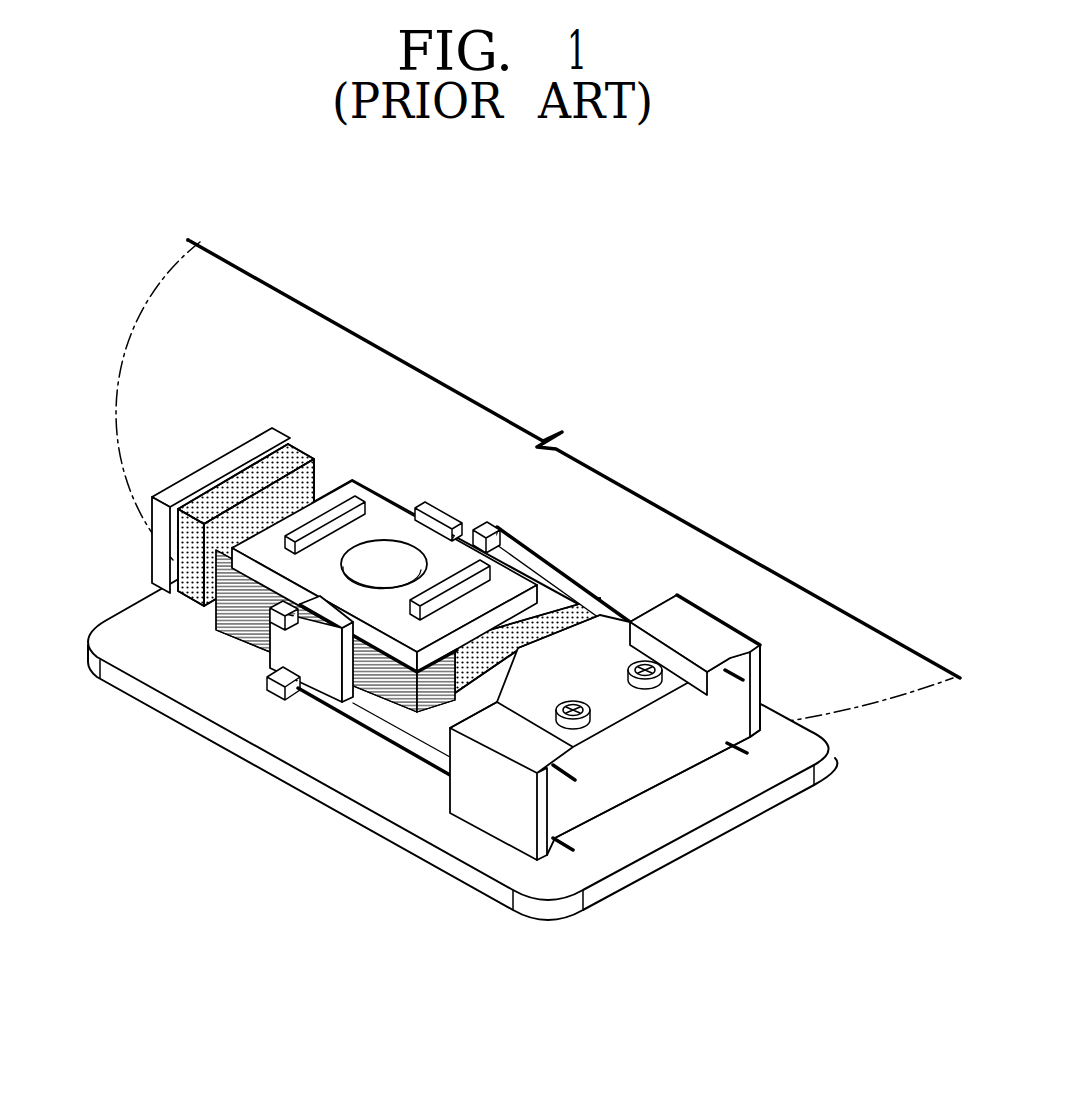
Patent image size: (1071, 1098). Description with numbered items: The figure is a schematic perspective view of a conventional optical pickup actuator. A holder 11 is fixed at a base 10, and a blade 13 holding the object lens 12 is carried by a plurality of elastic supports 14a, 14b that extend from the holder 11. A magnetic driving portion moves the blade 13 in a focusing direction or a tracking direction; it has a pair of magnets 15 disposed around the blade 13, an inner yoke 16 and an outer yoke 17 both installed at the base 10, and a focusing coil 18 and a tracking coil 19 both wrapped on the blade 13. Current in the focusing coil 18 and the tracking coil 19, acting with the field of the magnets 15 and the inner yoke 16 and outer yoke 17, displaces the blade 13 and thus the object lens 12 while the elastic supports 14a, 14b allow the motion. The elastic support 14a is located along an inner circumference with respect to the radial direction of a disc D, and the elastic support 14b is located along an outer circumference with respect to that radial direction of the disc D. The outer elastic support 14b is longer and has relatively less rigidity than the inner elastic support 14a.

The base 10 is at (493, 866).
The holder 11 is at (641, 777).
The object lens 12 is at (393, 553).
The blade 13 is at (388, 541).
The elastic support 14a is at (392, 695).
The elastic support 14b is at (603, 622).
The magnets 15 is at (245, 478).
The inner yoke 16 is at (350, 496).
The outer yoke 17 is at (198, 478).
The focusing coil 18 is at (233, 608).
The tracking coil 19 is at (404, 700).
The disc D is at (900, 692).